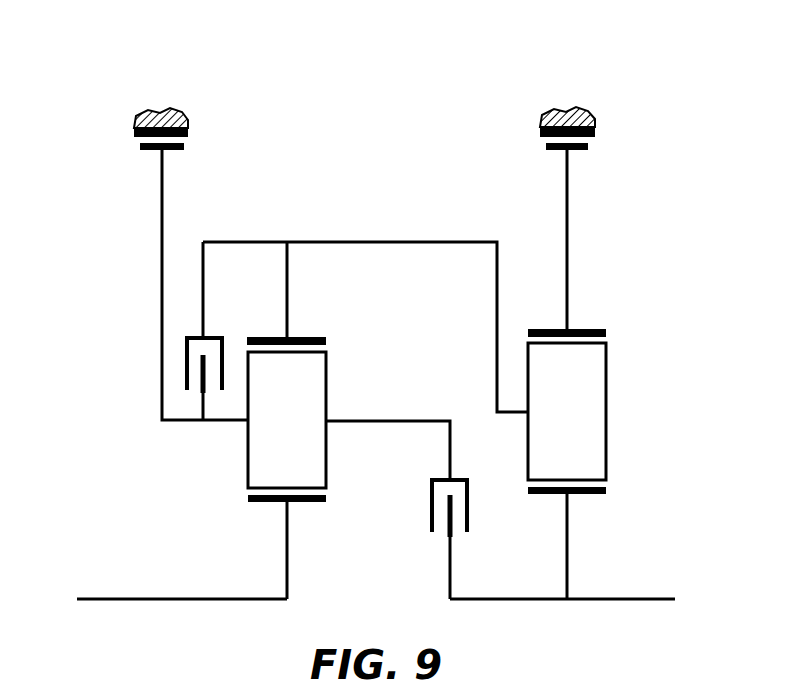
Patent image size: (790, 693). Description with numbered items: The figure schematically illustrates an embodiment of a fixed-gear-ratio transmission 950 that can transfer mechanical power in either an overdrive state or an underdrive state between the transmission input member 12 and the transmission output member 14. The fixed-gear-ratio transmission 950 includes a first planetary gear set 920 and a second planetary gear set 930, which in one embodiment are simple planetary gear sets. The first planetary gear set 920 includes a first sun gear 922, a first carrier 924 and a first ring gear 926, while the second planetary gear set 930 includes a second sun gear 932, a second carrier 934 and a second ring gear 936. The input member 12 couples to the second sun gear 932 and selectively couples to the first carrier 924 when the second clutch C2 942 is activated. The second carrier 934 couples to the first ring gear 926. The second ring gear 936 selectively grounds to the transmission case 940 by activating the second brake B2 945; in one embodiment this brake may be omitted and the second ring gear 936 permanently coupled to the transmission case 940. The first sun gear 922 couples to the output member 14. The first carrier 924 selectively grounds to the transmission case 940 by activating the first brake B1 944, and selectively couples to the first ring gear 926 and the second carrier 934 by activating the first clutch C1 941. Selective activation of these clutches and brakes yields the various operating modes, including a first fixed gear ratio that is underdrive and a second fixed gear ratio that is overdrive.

The transmission input member 12 is at (580, 599).
The transmission output member 14 is at (164, 599).
The first planetary gear set 920 is at (302, 336).
The first sun gear 922 is at (302, 504).
The first carrier 924 is at (287, 420).
The first ring gear 926 is at (260, 336).
The second planetary gear set 930 is at (584, 328).
The second sun gear 932 is at (604, 496).
The second carrier 934 is at (567, 411).
The second ring gear 936 is at (552, 327).
The transmission case 940 is at (150, 108).
The first clutch C1 941 is at (185, 372).
The second clutch C2 942 is at (430, 510).
The first brake B1 944 is at (172, 140).
The second brake B2 945 is at (556, 141).
The fixed-gear-ratio transmission 950 is at (660, 137).